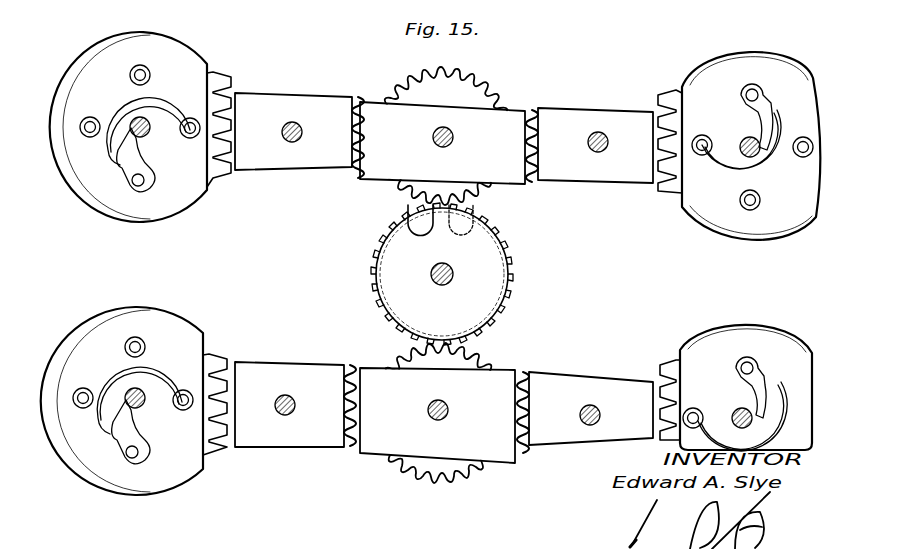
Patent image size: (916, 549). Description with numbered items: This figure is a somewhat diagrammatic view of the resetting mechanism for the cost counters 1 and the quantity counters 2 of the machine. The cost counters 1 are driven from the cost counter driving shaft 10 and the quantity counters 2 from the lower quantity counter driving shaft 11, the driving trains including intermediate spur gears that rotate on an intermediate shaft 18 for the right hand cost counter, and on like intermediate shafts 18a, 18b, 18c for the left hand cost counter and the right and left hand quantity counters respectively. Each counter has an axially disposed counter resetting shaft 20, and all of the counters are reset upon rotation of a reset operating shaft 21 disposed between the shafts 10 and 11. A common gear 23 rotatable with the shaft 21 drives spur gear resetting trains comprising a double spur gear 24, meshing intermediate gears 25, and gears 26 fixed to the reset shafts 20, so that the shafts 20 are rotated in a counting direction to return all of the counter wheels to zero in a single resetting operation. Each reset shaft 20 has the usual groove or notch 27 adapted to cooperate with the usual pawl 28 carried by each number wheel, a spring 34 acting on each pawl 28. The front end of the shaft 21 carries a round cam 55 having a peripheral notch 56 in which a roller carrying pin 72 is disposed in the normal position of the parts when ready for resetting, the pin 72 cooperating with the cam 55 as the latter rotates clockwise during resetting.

The cost counter 1 is at (158, 38).
The quantity counter 2 is at (163, 311).
The cost counter driving shaft 10 is at (441, 136).
The quantity counter driving shaft 11 is at (446, 410).
The intermediate shaft 18 is at (601, 136).
The intermediate shaft 18a is at (298, 141).
The intermediate shaft 18b is at (587, 407).
The intermediate shaft 18c is at (293, 400).
The counter resetting shaft 20 is at (151, 132).
The reset operating shaft 21 is at (433, 281).
The common gear 23 is at (508, 265).
The double spur gear 24 is at (515, 117).
The intermediate gear 25 is at (253, 98).
The gear 26 is at (224, 84).
The groove or notch 27 is at (131, 127).
The pawl 28 is at (128, 178).
The spring 34 is at (785, 405).
The round cam 55 is at (392, 261).
The peripheral notch 56 is at (418, 236).
The roller carrying pin 72 is at (435, 234).